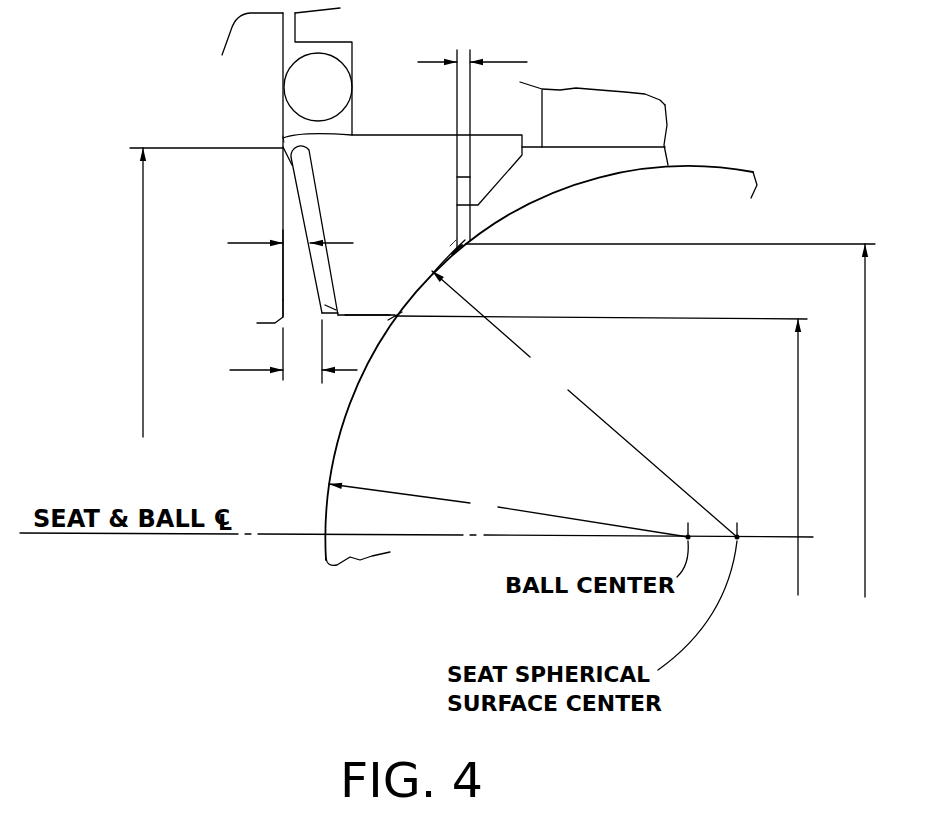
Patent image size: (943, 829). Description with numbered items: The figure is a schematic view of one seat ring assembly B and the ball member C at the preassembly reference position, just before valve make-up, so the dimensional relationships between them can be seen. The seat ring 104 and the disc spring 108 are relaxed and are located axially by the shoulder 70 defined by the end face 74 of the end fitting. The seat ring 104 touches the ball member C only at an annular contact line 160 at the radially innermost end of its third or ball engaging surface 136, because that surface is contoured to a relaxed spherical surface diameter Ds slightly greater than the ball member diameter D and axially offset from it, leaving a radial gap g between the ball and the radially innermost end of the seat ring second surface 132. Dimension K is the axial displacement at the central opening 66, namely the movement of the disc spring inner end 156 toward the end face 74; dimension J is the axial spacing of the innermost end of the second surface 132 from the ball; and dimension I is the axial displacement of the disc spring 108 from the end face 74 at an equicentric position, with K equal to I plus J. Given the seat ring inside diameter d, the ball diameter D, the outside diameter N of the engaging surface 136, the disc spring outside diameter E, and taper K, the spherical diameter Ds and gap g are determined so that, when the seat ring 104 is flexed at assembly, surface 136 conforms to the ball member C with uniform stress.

The seat ring 104 is at (400, 172).
The disc spring 108 is at (314, 189).
The shoulder 70 is at (276, 268).
The end face 74 is at (281, 292).
The central opening 66 is at (368, 326).
The disc spring inner end 156 is at (328, 302).
The annular contact line 160 is at (393, 320).
The seat ring second surface 132 is at (460, 177).
The seat ring third or ball engaging surface 136 is at (457, 249).
The radial gap g is at (453, 241).
The seat ring assembly B is at (281, 139).
The ball member C is at (745, 167).
The outside diameter of the disc spring E is at (206, 308).
The dimension l I is at (285, 240).
The dimension k K is at (284, 351).
The dimension j J is at (463, 59).
The outside diameter of the seat ring ball engaging surface N is at (670, 436).
The seat ring inside diameter d is at (601, 473).
The relaxed seat ring spherical surface diameter Ds is at (584, 404).
The ball member diameter D is at (508, 510).